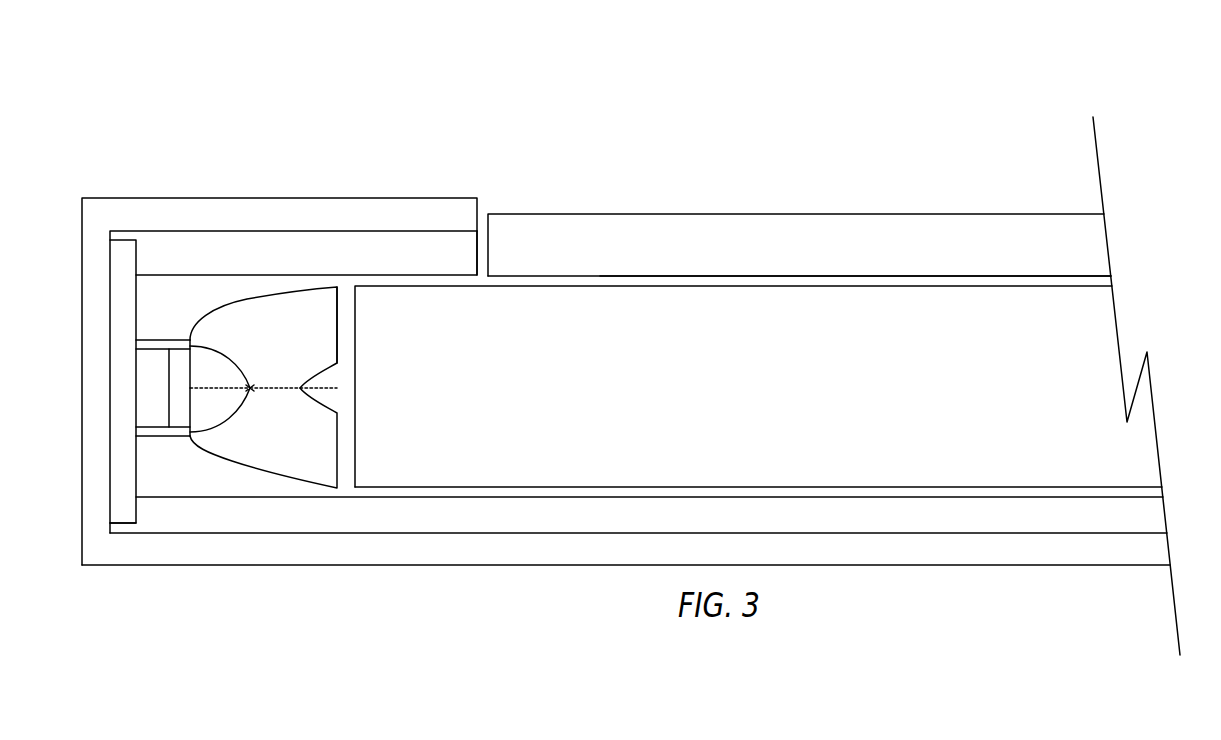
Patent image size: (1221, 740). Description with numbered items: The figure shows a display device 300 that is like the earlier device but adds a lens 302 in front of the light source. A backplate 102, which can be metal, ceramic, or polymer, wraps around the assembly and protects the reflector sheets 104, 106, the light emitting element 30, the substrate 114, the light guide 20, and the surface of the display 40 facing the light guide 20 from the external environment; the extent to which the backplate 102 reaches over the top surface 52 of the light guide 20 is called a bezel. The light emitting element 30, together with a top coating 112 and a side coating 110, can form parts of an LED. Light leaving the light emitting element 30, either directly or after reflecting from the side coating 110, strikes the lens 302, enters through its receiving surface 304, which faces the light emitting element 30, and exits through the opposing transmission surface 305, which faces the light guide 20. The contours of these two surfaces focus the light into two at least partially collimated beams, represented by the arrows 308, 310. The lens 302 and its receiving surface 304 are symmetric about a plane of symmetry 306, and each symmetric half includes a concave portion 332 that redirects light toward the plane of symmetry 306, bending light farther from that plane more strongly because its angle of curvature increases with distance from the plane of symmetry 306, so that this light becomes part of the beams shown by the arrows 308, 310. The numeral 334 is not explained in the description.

The display device 300 is at (166, 112).
The backplate 102 is at (368, 197).
The reflector sheet 104 is at (1128, 505).
The reflector sheet 106 is at (463, 250).
The display 40 is at (1020, 228).
The top surface 52 is at (825, 287).
The light guide 20 is at (1157, 383).
The light emitting element 30 is at (148, 372).
The substrate 114 is at (130, 524).
The side coating 110 is at (176, 345).
The top coating 112 is at (180, 413).
The lens 302 is at (278, 300).
The receiving surface 304 is at (238, 365).
The transmission surface 305 is at (337, 313).
The plane of symmetry 306 is at (337, 388).
The arrow 308 is at (380, 477).
The arrow 310 is at (380, 303).
The concave portion 332 is at (212, 344).
The focal point 334 is at (250, 388).